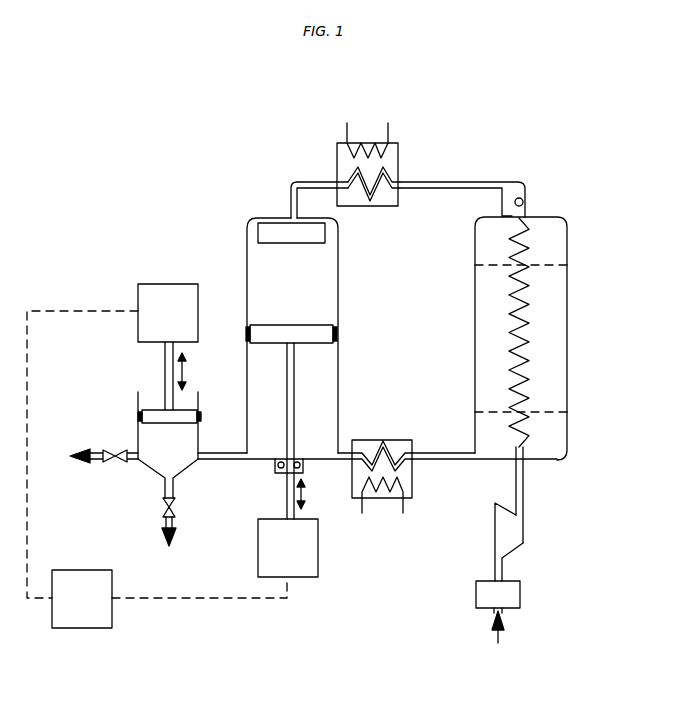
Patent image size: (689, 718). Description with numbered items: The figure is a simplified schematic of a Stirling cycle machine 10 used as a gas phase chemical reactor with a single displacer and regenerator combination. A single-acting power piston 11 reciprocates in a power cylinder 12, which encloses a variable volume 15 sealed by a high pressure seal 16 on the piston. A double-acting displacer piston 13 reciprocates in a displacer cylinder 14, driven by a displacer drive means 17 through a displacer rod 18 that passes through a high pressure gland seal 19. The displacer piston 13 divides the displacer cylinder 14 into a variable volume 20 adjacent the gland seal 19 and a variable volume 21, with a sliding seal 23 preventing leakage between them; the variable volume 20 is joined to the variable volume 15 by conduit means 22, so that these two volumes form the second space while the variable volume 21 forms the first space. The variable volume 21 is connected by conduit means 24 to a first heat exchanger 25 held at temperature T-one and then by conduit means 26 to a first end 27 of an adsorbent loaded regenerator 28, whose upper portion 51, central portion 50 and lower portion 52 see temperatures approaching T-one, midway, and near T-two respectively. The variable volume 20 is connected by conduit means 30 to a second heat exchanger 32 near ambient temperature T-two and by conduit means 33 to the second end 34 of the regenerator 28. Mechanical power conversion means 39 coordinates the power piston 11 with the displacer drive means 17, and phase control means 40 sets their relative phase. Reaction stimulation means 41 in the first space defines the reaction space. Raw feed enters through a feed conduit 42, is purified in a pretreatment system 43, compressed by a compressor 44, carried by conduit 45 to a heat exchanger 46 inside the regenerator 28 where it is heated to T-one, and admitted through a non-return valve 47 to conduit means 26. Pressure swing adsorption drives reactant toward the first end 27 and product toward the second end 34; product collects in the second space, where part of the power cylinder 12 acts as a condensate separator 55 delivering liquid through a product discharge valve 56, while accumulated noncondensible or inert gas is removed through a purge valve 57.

The Stirling cycle machine 10 is at (228, 108).
The power piston 11 is at (162, 408).
The power cylinder 12 is at (138, 426).
The displacer piston 13 is at (320, 339).
The displacer cylinder 14 is at (339, 272).
The variable volume 15 is at (178, 451).
The high pressure seal 16 is at (203, 413).
The displacer drive means 17 is at (318, 552).
The displacer rod 18 is at (290, 372).
The high pressure gland seal 19 is at (278, 471).
The variable volume 20 is at (323, 408).
The variable volume 21 is at (296, 280).
The conduit means 22 is at (218, 461).
The sliding seal 23 is at (337, 336).
The conduit means 24 is at (296, 180).
The first heat exchanger 25 is at (400, 161).
The conduit means 26 is at (438, 182).
The first end 27 is at (478, 219).
The adsorbent loaded regenerator 28 is at (475, 298).
The conduit means 30 is at (347, 461).
The second heat exchanger 32 is at (413, 480).
The conduit means 33 is at (457, 452).
The second end 34 is at (503, 463).
The mechanical power conversion means 39 is at (138, 287).
The phase control means 40 is at (92, 628).
The reaction stimulation means 41 is at (275, 230).
The feed conduit 42 is at (503, 622).
The pretreatment system 43 is at (520, 595).
The compressor 44 is at (523, 530).
The conduit 45 is at (525, 480).
The heat exchanger 46 is at (528, 386).
The non-return valve 47 is at (525, 205).
The central portion 50 is at (552, 335).
The upper portion 51 is at (552, 245).
The lower portion 52 is at (552, 440).
The condensate separator 55 is at (188, 470).
The product discharge valve 56 is at (162, 504).
The purge valve 57 is at (113, 463).